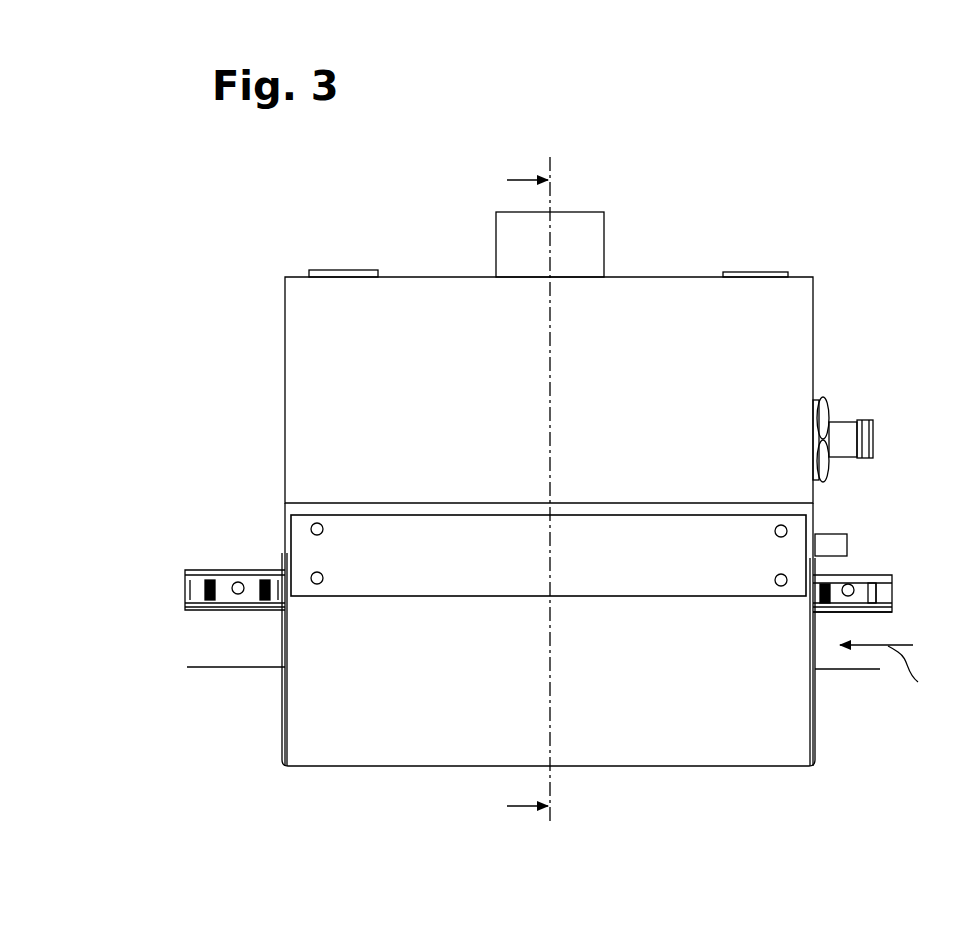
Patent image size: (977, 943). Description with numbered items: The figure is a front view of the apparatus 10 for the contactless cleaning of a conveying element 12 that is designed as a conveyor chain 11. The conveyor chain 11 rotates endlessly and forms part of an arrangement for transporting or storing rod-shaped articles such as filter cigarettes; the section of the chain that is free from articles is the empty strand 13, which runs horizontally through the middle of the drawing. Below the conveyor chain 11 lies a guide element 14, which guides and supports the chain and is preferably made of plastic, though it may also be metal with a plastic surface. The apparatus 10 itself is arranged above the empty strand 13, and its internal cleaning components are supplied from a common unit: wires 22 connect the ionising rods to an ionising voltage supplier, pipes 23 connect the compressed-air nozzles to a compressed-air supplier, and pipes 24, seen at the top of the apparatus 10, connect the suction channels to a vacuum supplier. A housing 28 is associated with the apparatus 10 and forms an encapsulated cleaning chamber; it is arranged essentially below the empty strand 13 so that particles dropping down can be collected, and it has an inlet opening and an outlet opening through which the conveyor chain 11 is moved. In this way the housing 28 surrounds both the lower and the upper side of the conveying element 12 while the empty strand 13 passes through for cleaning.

The apparatus 10 is at (799, 252).
The conveyor chain 11 is at (850, 584).
The conveying element 12 is at (866, 580).
The empty strand 13 is at (232, 553).
The guide element 14 is at (882, 613).
The wires 22 is at (830, 545).
The pipes 23 is at (842, 432).
The pipes 24 is at (582, 230).
The housing 28 is at (714, 742).